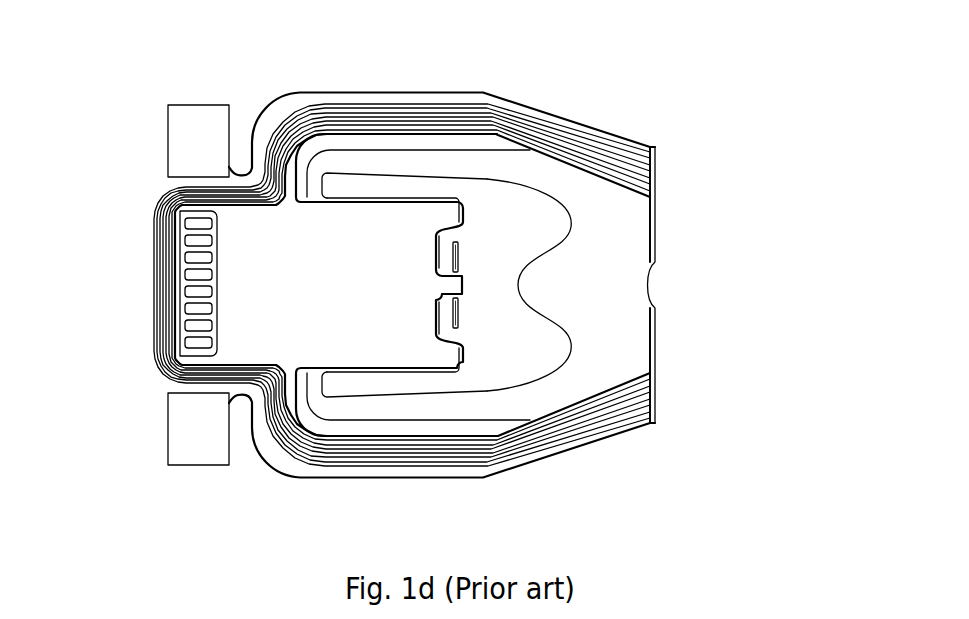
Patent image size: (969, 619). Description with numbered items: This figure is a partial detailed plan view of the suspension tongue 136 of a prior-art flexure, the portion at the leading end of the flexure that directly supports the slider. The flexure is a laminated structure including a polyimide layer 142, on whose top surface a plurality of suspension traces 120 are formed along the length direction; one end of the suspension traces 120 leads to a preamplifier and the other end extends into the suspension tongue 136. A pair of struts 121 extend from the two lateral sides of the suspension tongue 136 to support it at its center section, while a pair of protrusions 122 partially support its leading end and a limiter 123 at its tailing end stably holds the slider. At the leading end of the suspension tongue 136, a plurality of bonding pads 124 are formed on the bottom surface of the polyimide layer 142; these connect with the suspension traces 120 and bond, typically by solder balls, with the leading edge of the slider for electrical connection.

The suspension traces 120 is at (275, 142).
The struts 121 is at (350, 105).
The protrusions 122 is at (192, 127).
The limiter 123 is at (451, 281).
The bonding pads 124 is at (202, 327).
The suspension tongue 136 is at (375, 218).
The polyimide layer 142 is at (160, 195).